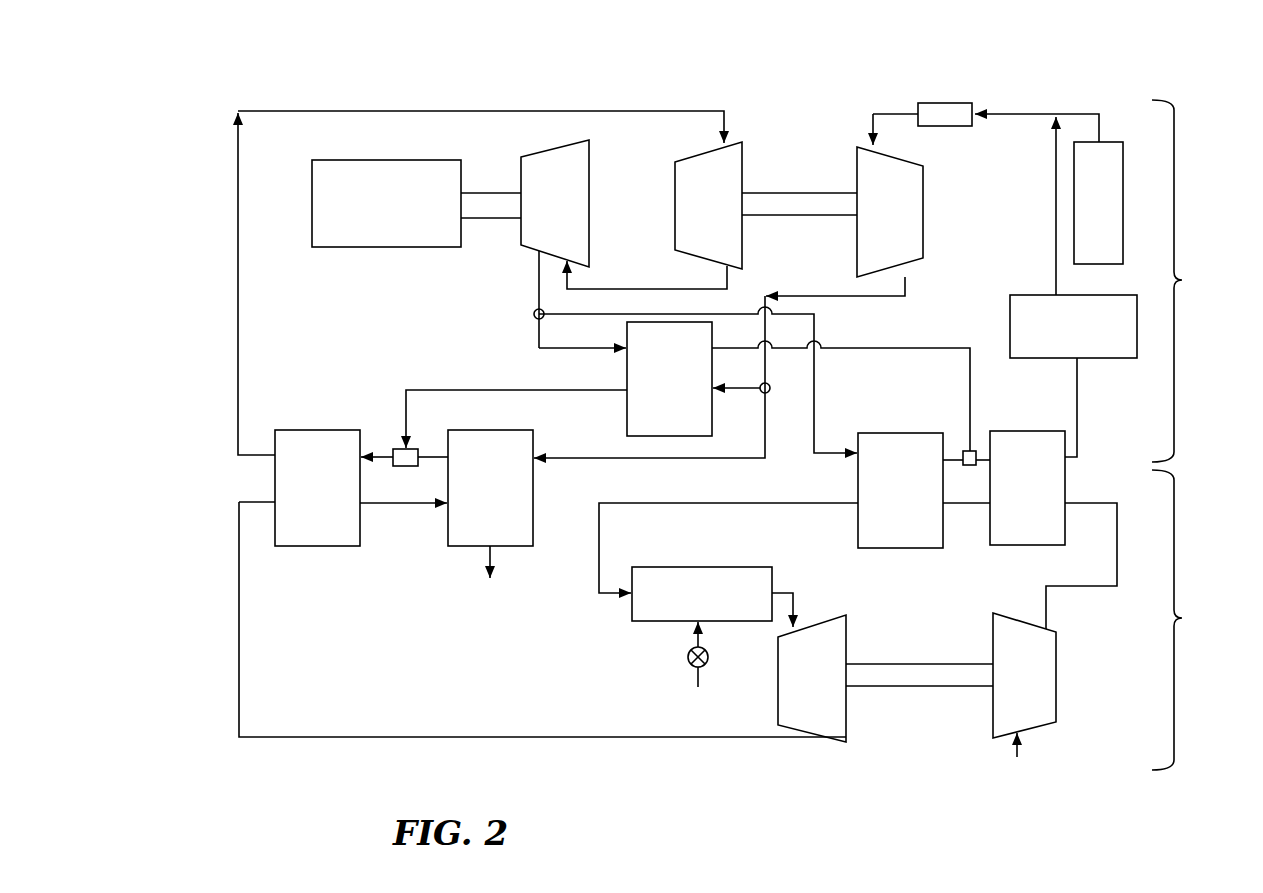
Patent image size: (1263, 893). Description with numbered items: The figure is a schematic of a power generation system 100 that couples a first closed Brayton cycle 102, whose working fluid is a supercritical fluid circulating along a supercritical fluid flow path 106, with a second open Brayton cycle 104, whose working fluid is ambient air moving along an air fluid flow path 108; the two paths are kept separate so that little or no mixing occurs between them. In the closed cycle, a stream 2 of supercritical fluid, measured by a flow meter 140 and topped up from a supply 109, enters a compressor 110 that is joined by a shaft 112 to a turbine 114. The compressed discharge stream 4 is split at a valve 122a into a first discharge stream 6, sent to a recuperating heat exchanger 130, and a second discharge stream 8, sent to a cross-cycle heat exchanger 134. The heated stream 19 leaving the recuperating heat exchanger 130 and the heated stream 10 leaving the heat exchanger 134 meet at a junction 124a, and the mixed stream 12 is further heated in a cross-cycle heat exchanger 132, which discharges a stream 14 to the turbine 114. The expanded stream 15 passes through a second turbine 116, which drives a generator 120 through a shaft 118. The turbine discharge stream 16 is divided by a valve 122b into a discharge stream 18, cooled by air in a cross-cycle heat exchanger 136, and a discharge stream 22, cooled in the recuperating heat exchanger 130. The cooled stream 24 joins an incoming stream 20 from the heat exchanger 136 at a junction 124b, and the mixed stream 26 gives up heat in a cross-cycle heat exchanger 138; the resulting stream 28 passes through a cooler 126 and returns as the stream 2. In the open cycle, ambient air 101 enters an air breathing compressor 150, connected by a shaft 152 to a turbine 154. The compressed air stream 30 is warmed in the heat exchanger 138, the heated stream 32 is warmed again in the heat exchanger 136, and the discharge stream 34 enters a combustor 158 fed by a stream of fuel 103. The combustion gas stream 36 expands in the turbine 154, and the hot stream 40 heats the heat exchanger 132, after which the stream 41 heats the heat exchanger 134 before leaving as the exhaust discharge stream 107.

The power generation system 100 is at (237, 73).
The stream of supercritical fluid 2 is at (1013, 113).
The discharge stream 4 is at (906, 280).
The first discharge stream 6 is at (748, 392).
The second discharge stream 8 is at (712, 460).
The stream of heated SCO2 10 is at (432, 455).
The mixed stream 12 is at (380, 453).
The stream of heated SCO2 14 is at (238, 330).
The stream 15 is at (677, 288).
The discharge stream 16 is at (538, 283).
The second discharge stream 18 is at (618, 318).
The stream of heated SCO2 19 is at (418, 388).
The incoming stream 20 is at (951, 453).
The first discharge stream 22 is at (560, 350).
The discharge stream 24 is at (940, 352).
The mixed stream 26 is at (975, 452).
The stream of cooled SCO2 28 is at (1080, 405).
The stream of compressed air 30 is at (1117, 565).
The stream of heated compressed air 32 is at (966, 508).
The discharge stream 34 is at (770, 505).
The discharge stream of combustion gas 36 is at (797, 603).
The stream of expanded hot combustion gas 40 is at (415, 737).
The stream of hot combustion gas 41 is at (388, 505).
The ambient air 101 is at (1021, 774).
The first closed Brayton cycle 102 is at (1197, 281).
The stream of fuel 103 is at (696, 682).
The second open Brayton cycle 104 is at (1198, 620).
The supercritical fluid flow path 106 is at (697, 103).
The discharge stream 107 is at (492, 594).
The air fluid flow path 108 is at (753, 742).
The supply 109 is at (1077, 216).
The compressor 110 is at (869, 222).
The shaft 112 is at (800, 205).
The turbine 114 is at (687, 224).
The second SCO2 turbine 116 is at (534, 219).
The shaft 118 is at (497, 202).
The generator 120 is at (366, 214).
The valve 122a is at (771, 390).
The valve 122b is at (533, 314).
The junction 124a is at (430, 478).
The junction 124b is at (978, 467).
The cooler 126 is at (1052, 339).
The recuperating heat exchanger 130 is at (648, 389).
The cross-cycle heat exchanger 132 is at (296, 499).
The cross-cycle heat exchanger 134 is at (469, 499).
The cross-cycle heat exchanger 136 is at (879, 501).
The cross-cycle heat exchanger 138 is at (1006, 501).
The flow meter 140 is at (945, 112).
The air breathing compressor 150 is at (1003, 687).
The shaft 152 is at (925, 672).
The turbine 154 is at (791, 694).
The combustor 158 is at (681, 606).